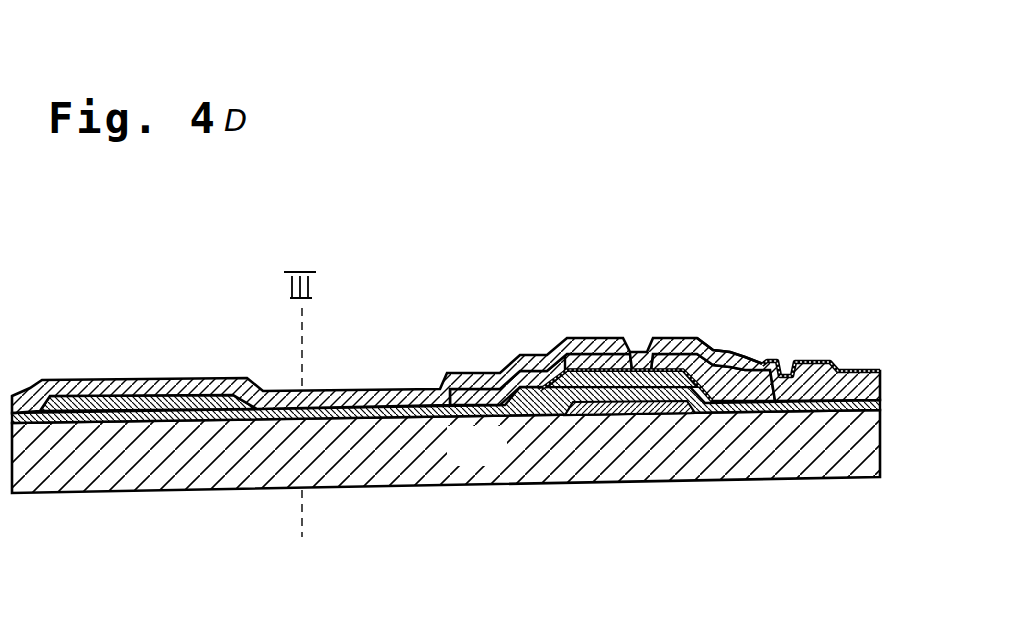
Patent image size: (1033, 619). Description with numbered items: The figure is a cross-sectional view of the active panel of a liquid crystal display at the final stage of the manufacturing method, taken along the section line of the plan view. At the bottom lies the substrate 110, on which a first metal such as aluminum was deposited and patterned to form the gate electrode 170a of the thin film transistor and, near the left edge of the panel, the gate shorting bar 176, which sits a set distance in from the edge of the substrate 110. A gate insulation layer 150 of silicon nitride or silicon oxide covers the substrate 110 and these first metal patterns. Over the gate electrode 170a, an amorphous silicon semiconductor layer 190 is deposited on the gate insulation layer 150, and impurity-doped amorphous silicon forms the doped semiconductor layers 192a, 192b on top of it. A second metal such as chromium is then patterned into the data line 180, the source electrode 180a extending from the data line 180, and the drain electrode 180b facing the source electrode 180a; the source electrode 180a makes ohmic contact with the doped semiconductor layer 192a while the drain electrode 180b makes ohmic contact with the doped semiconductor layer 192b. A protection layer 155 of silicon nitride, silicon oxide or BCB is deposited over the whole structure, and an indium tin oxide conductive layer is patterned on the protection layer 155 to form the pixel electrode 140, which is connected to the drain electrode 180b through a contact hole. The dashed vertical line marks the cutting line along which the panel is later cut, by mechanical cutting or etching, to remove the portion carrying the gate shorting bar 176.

The substrate 110 is at (503, 463).
The gate insulation layer 150 is at (377, 420).
The protection layer 155 is at (407, 383).
The gate electrode 170a is at (643, 410).
The gate shorting bar 176 is at (147, 422).
The data line 180 is at (500, 378).
The source electrode 180a is at (587, 340).
The drain electrode 180b is at (677, 338).
The semiconductor layer 190 is at (720, 410).
The doped semiconductor layer 192a is at (558, 410).
The doped semiconductor layer 192b is at (738, 348).
The pixel electrode 140 is at (862, 370).